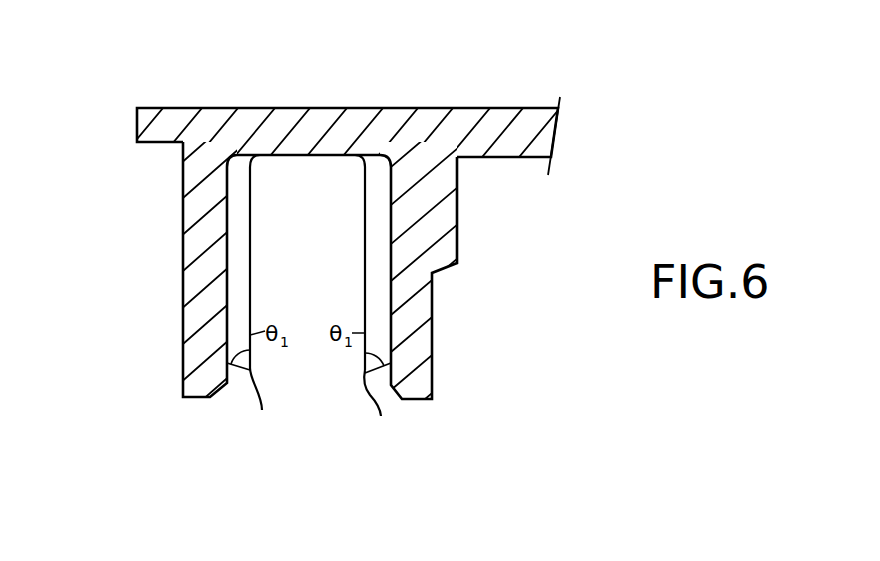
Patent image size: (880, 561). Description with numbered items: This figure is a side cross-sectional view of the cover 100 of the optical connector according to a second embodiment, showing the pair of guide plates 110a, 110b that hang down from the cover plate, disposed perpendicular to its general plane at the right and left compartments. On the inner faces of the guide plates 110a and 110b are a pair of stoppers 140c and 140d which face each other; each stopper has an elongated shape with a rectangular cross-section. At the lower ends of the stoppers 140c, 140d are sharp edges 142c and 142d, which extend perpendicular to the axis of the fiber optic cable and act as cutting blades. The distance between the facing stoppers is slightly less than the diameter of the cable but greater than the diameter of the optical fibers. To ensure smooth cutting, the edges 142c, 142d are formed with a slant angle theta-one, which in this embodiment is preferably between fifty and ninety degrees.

The cover 100 is at (328, 99).
The guide plate 110a is at (181, 283).
The guide plate 110b is at (436, 302).
The stopper 140c is at (252, 224).
The stopper 140d is at (365, 249).
The edge 142c is at (262, 410).
The edge 142d is at (381, 416).